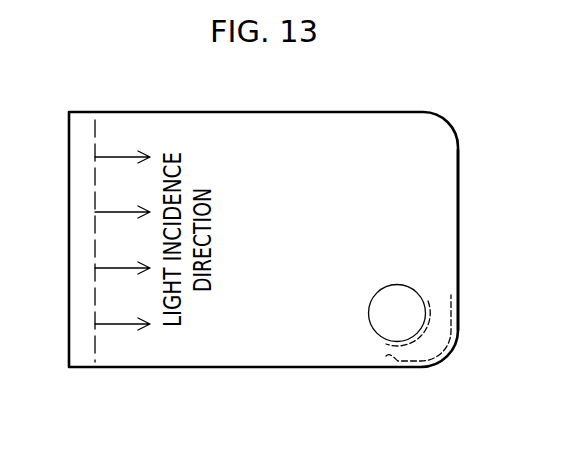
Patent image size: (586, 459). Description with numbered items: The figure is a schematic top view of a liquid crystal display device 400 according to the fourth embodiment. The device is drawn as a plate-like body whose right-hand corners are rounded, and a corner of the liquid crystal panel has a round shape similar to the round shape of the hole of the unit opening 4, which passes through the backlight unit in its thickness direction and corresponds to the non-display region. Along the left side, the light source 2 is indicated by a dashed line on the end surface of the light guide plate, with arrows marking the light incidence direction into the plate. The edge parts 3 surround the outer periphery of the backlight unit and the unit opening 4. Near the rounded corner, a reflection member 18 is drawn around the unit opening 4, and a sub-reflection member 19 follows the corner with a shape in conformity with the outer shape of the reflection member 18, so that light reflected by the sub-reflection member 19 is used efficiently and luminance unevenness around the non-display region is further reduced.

The liquid crystal display device 400 is at (407, 103).
The light source 2 is at (80, 241).
The edge parts 3 is at (458, 148).
The unit opening 4 is at (371, 311).
The reflection member 18 is at (430, 310).
The sub-reflection member 19 is at (386, 356).